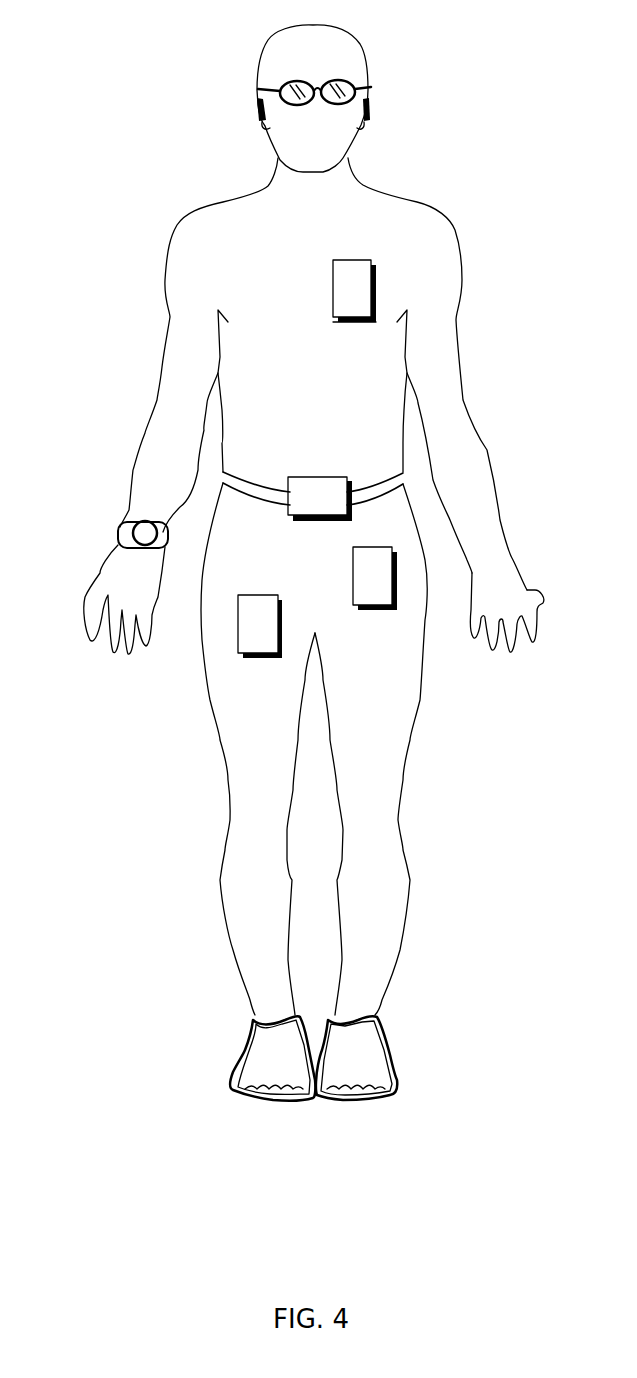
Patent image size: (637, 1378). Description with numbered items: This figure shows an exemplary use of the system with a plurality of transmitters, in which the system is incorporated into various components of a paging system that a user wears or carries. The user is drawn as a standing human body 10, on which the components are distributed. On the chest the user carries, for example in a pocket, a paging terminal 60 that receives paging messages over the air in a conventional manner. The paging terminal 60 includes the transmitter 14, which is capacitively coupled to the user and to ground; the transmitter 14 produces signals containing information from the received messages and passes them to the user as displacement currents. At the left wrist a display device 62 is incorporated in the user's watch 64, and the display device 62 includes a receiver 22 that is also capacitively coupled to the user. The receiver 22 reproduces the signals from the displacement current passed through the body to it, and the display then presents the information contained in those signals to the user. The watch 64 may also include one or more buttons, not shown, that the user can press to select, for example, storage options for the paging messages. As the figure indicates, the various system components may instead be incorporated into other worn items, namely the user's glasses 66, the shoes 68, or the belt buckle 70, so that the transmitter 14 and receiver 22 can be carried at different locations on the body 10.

The user body 10 is at (452, 355).
The transmitter 14 is at (338, 323).
The receiver 22 is at (149, 520).
The paging terminal 60 is at (360, 260).
The display device 62 is at (126, 527).
The watch 64 is at (162, 522).
The glasses 66 is at (376, 83).
The shoes 68 is at (391, 1067).
The belt buckle 70 is at (339, 477).